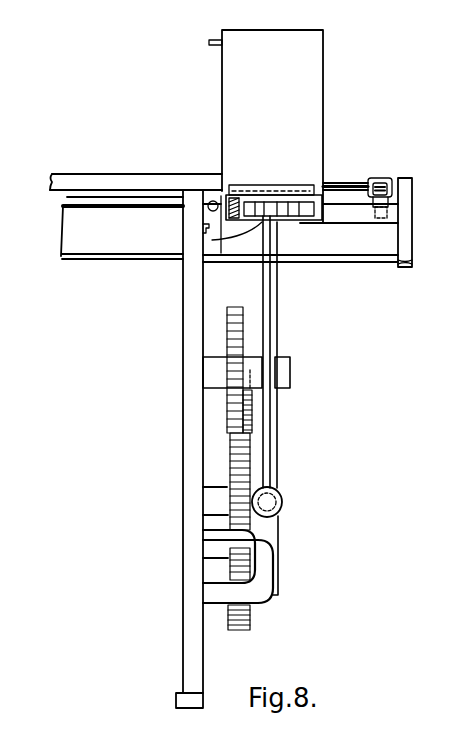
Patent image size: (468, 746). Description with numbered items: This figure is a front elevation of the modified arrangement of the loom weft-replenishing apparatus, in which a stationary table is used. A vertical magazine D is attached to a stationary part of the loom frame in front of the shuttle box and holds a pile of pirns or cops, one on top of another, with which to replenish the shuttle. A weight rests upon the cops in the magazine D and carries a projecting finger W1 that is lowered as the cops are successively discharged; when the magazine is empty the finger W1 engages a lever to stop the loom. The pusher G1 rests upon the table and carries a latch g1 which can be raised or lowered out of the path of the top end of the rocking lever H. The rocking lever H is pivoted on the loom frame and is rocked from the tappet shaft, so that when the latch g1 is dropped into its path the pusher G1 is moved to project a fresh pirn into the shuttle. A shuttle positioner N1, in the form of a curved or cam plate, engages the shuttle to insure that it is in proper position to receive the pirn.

The magazine D is at (272, 126).
The projecting finger W1 is at (212, 29).
The latch g1 is at (251, 189).
The pusher G1 is at (307, 208).
The shuttle positioner N1 is at (394, 184).
The rocking lever H is at (271, 316).